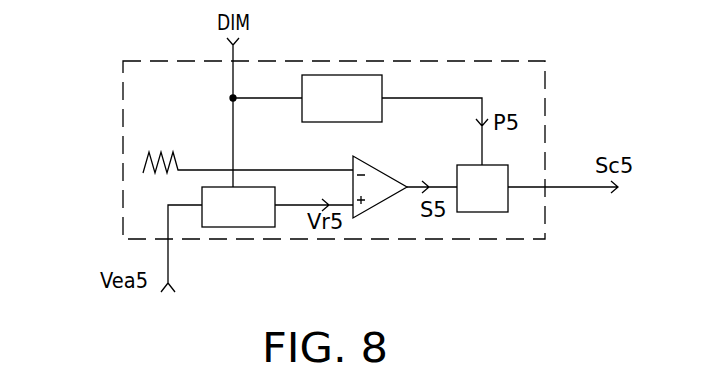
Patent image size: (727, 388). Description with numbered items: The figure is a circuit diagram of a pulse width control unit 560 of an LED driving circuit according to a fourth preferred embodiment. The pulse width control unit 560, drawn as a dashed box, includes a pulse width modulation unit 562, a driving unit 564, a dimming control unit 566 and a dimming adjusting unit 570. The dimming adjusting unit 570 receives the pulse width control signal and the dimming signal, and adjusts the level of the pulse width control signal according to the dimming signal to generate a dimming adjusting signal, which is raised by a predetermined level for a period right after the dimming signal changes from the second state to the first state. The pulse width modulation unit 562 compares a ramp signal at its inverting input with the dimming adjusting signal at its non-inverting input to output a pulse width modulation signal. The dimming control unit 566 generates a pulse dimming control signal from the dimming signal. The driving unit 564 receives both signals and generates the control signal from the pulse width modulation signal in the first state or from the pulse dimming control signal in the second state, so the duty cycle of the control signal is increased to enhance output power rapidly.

The pulse width control unit 560 is at (128, 93).
The pulse width modulation unit 562 is at (394, 180).
The driving unit 564 is at (482, 188).
The dimming control unit 566 is at (342, 98).
The dimming adjusting unit 570 is at (238, 207).